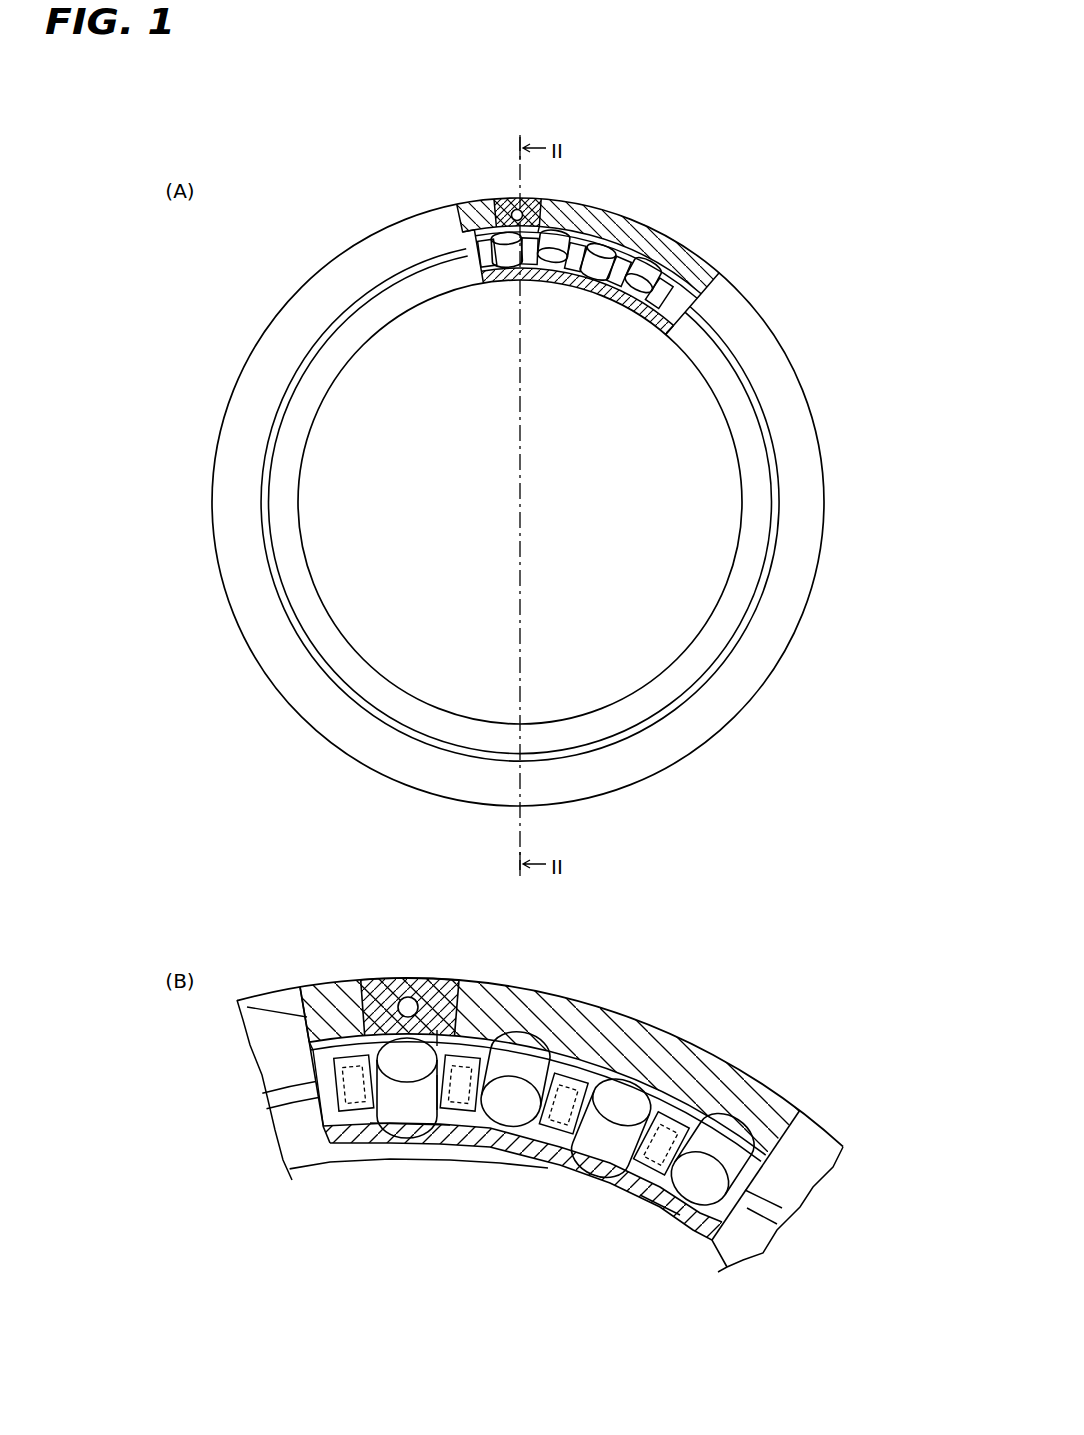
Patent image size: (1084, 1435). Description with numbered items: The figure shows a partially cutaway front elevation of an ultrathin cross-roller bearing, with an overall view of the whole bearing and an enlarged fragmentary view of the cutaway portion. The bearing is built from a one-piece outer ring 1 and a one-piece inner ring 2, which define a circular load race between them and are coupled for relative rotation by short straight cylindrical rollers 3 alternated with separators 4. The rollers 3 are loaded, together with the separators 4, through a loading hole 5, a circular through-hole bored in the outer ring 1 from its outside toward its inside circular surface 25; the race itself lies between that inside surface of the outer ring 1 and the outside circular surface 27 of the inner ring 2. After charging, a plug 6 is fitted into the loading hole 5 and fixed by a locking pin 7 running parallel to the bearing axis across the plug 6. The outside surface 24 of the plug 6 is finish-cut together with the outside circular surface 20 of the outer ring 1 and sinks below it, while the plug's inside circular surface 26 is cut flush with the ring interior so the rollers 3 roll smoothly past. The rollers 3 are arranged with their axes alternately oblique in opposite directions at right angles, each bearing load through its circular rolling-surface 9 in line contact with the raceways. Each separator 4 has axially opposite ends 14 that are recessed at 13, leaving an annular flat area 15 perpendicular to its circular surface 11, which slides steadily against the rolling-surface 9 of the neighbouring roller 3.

The outer ring 1 is at (367, 258).
The inner ring 2 is at (337, 359).
The roller 3 is at (627, 260).
The separator 4 is at (650, 272).
The loading hole 5 is at (495, 253).
The plug 6 is at (482, 206).
The locking pin 7 is at (523, 213).
The circular rolling-surface 9 is at (676, 295).
The circular surface 11 is at (300, 1032).
The recess 13 is at (420, 1140).
The axially opposite ends 14 is at (387, 1120).
The annular flat area 15 is at (437, 1093).
The outside circular surface 20 is at (582, 1000).
The outside surface 24 is at (514, 201).
The inside circular surface 25 is at (318, 1010).
The inside circular surface 26 is at (538, 231).
The outside circular surface 27 is at (653, 1207).